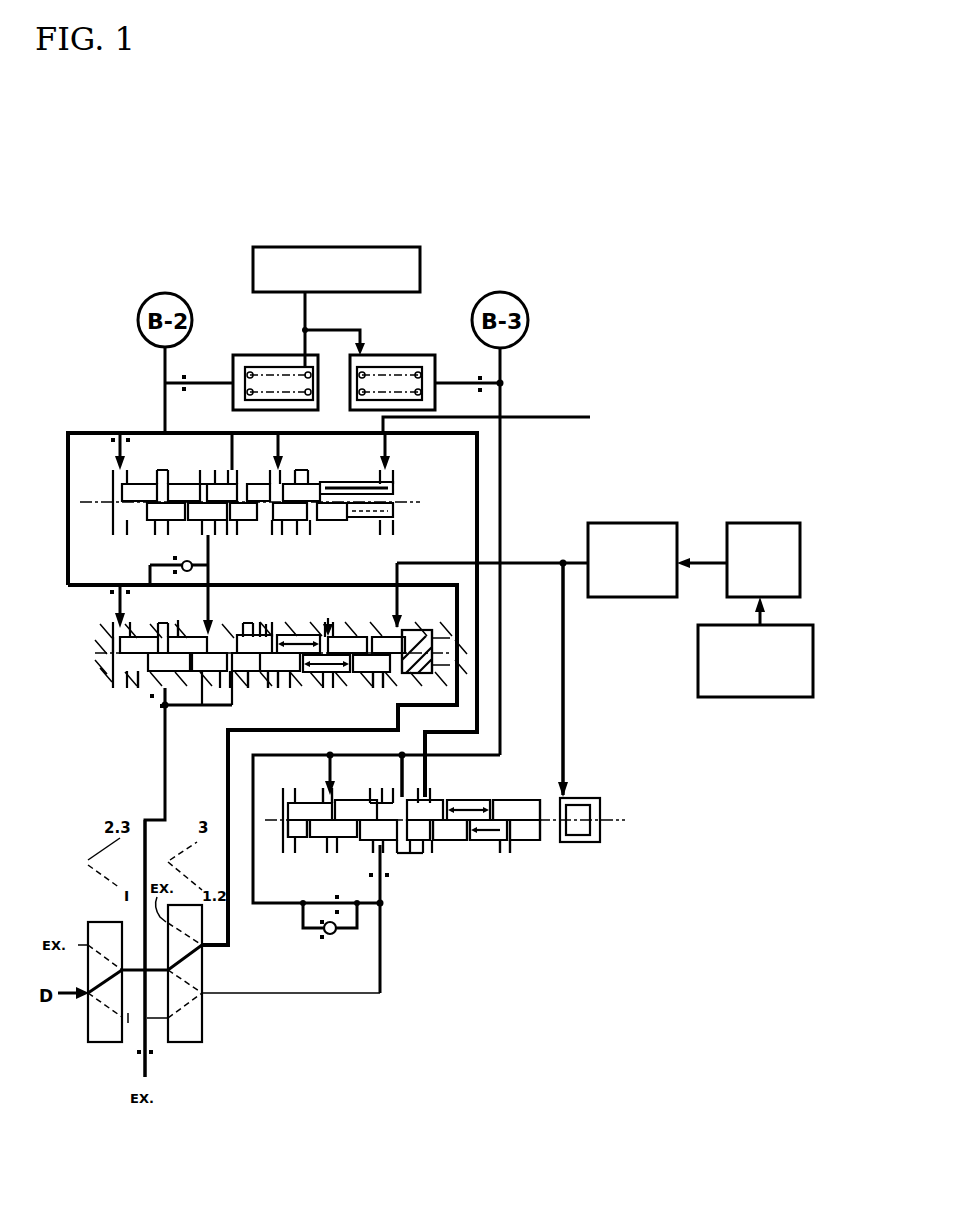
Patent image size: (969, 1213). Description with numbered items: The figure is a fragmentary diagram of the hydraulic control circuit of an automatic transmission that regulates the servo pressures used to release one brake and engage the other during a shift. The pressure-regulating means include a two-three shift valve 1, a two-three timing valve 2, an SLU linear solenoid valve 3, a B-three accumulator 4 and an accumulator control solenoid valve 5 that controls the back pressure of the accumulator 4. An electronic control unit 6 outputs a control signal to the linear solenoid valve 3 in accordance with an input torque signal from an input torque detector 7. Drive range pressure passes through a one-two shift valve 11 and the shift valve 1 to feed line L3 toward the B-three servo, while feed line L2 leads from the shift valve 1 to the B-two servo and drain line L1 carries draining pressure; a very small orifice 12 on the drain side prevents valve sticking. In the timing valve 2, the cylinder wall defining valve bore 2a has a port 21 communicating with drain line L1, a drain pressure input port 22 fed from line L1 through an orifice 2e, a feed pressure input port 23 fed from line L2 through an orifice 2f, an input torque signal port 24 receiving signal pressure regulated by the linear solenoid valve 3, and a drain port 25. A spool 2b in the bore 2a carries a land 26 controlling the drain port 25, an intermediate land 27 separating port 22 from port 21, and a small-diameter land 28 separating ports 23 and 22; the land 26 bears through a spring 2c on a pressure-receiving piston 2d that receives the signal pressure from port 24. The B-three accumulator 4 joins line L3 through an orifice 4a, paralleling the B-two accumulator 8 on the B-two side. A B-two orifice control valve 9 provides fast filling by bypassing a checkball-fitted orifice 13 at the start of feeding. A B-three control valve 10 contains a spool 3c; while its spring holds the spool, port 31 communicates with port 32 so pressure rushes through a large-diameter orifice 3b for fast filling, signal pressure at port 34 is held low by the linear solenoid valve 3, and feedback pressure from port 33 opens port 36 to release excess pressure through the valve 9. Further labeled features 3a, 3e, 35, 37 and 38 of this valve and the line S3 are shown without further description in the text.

The 2-3 shift valve 1 is at (214, 1026).
The 2-3 timing valve 2 is at (95, 676).
The valve bore 2a is at (218, 610).
The spool 2b is at (185, 615).
The spring 2c is at (336, 615).
The pressure-receiving piston 2d is at (378, 690).
The orifice 2e is at (178, 738).
The orifice 2f is at (112, 583).
The SLU linear solenoid valve 3 is at (630, 597).
The land of control valve 3a is at (498, 800).
The large-diameter orifice 3b is at (372, 876).
The spool 3c is at (415, 855).
The land of control valve 3e is at (543, 842).
The B-3 accumulator 4 is at (410, 350).
The orifice 4a is at (476, 378).
The accumulator control solenoid valve 5 is at (420, 256).
The electronic control unit 6 is at (748, 523).
The input torque detector 7 is at (730, 697).
The B-2 accumulator 8 is at (252, 355).
The B-2 orifice control valve 9 is at (405, 500).
The B-3 control valve 10 is at (610, 808).
The 1-2 shift valve 11 is at (83, 1032).
The orifice 12 is at (152, 1053).
The checkball-fitted orifice 13 is at (210, 575).
The port 21 is at (252, 690).
The drain pressure input port 22 is at (160, 698).
The feed pressure input port 23 is at (100, 644).
The input torque signal port 24 is at (418, 633).
The drain port 25 is at (266, 626).
The land 26 is at (278, 690).
The land 27 is at (180, 700).
The small-diameter land 28 is at (130, 690).
The port 31 is at (385, 855).
The port 32 is at (399, 788).
The port 33 is at (336, 785).
The port 34 is at (570, 798).
The port of control valve 35 is at (505, 855).
The port 36 is at (430, 790).
The land of control valve 37 is at (343, 848).
The land of control valve 38 is at (450, 842).
The drain line L1 is at (162, 800).
The feed line L2 is at (352, 585).
The feed line L3 is at (502, 492).
The signal pressure line S3 is at (506, 419).